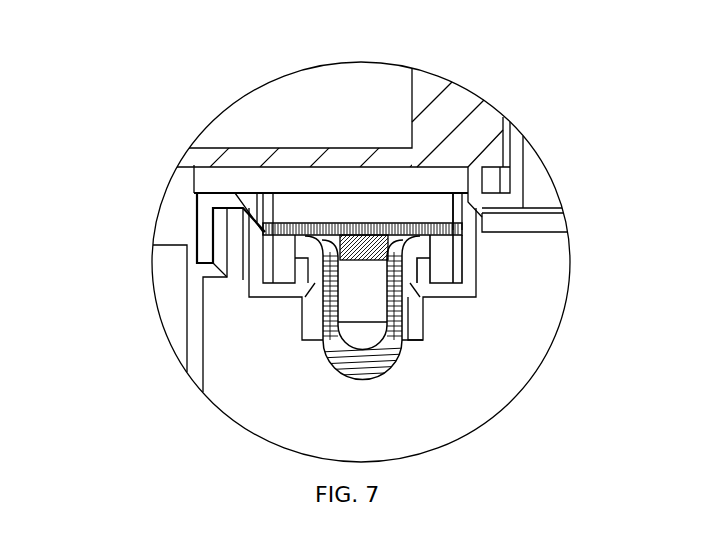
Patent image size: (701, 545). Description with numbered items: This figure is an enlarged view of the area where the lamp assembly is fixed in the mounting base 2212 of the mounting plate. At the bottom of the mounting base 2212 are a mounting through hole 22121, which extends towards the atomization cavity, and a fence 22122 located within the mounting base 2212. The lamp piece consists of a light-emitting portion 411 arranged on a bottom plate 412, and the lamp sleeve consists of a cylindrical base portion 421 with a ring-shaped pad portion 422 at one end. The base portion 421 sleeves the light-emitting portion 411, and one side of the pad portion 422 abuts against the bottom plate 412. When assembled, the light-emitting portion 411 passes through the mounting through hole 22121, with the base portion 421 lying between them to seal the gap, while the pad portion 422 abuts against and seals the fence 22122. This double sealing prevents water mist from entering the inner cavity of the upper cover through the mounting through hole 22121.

The bottom plate 412 is at (305, 236).
The pad portion 422 is at (300, 243).
The fence 22122 is at (300, 273).
The mounting base 2212 is at (440, 262).
The mounting through hole 22121 is at (415, 318).
The base portion 421 is at (310, 313).
The light-emitting portion 411 is at (340, 360).